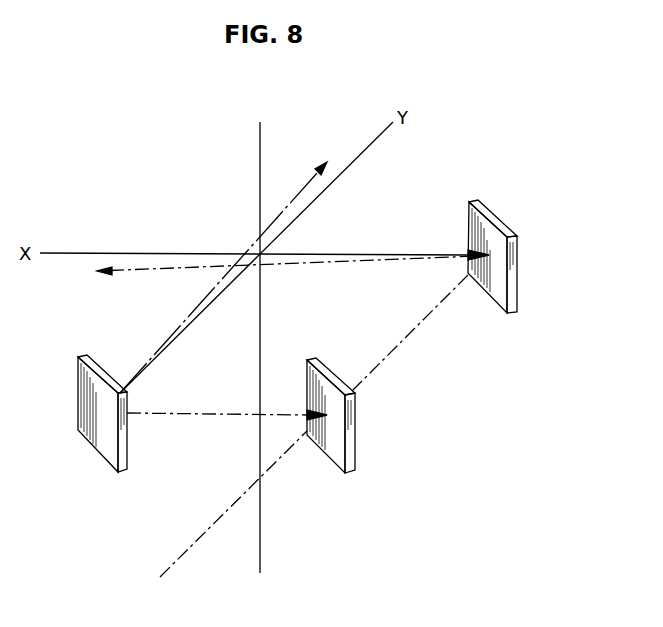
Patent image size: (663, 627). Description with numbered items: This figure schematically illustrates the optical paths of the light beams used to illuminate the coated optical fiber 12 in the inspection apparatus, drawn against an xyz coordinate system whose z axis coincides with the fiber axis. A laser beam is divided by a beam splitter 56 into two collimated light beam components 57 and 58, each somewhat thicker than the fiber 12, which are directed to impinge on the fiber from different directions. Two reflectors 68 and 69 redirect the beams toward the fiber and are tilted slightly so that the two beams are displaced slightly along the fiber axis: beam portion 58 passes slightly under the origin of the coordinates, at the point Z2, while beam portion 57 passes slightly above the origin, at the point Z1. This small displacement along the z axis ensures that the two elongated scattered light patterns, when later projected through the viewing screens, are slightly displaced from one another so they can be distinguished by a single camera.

The coated optical fiber 12 is at (260, 147).
The position slightly above the origin Z1 is at (260, 233).
The position slightly under the origin Z2 is at (261, 268).
The beam splitter 56 is at (355, 453).
The light beam component 57 is at (193, 416).
The light beam component 58 is at (402, 342).
The reflector 68 is at (517, 296).
The reflector 69 is at (97, 447).